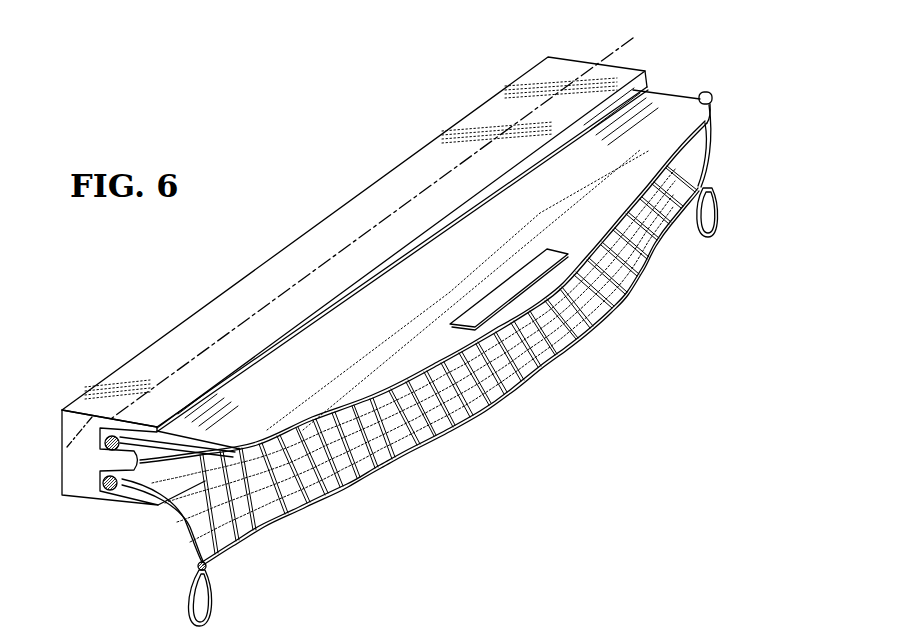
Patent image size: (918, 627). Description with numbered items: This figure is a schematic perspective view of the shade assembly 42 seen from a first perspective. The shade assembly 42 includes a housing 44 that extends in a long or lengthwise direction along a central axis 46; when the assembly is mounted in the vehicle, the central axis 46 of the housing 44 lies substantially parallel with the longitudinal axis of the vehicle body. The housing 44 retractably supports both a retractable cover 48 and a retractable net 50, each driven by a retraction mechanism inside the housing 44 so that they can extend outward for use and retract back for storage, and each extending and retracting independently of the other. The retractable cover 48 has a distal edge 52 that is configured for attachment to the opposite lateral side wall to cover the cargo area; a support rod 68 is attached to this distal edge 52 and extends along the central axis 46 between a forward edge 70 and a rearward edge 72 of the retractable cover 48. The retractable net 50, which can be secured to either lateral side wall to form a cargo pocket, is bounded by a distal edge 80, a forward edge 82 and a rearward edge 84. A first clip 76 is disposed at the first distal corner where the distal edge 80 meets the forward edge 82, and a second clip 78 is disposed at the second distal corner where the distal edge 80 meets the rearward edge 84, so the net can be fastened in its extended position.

The shade assembly 42 is at (318, 166).
The housing 44 is at (495, 118).
The central axis 46 is at (622, 40).
The retractable cover 48 is at (590, 252).
The retractable net 50 is at (478, 414).
The distal edge 52 is at (540, 366).
The support rod 68 is at (707, 93).
The forward edge 70 is at (658, 90).
The rearward edge 72 is at (208, 445).
The first clip 76 is at (716, 230).
The second clip 78 is at (213, 626).
The distal edge 80 is at (404, 448).
The forward edge 82 is at (693, 157).
The rearward edge 84 is at (207, 508).